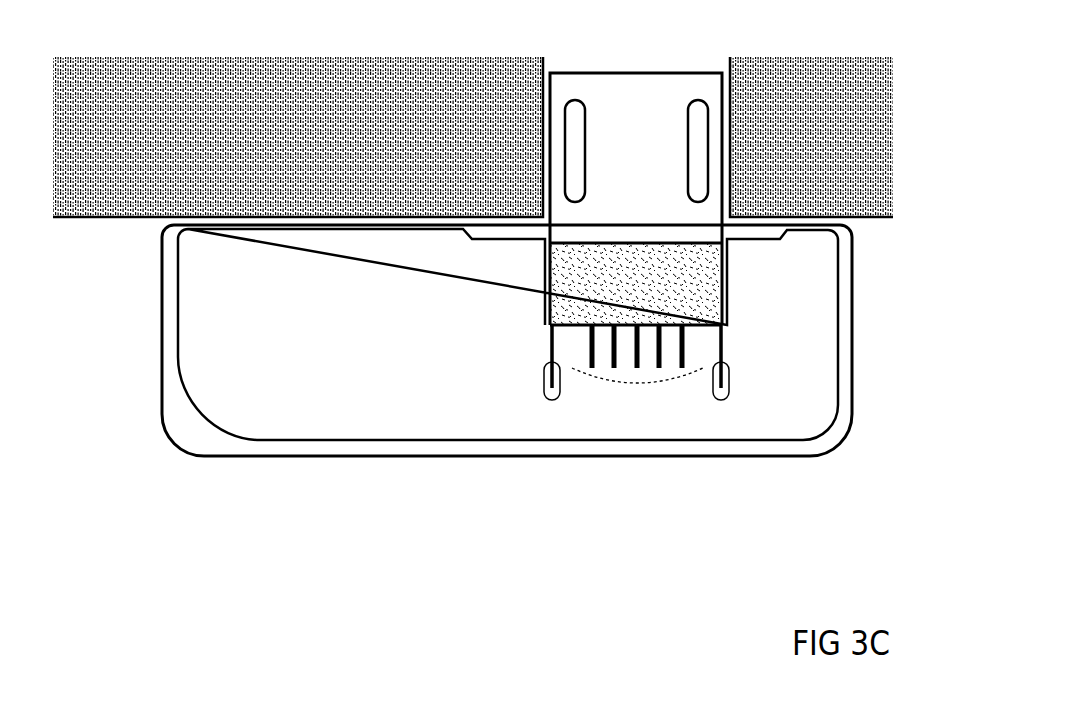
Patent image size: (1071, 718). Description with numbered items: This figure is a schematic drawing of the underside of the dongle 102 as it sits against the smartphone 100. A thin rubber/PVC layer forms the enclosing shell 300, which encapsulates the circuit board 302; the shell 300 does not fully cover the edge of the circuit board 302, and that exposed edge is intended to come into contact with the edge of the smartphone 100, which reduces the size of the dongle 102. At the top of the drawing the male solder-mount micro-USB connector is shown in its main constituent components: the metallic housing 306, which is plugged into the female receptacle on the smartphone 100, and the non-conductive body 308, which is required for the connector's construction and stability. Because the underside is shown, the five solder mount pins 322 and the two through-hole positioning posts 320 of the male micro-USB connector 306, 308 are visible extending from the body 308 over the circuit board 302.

The smartphone 100 is at (483, 193).
The dongle 102 is at (494, 401).
The enclosing shell 300 is at (177, 443).
The circuit board 302 is at (487, 295).
The metallic housing 306 is at (662, 168).
The non-conductive body 308 is at (658, 302).
The through-hole positioning posts 320 is at (548, 333).
The solder mount pins 322 is at (640, 382).